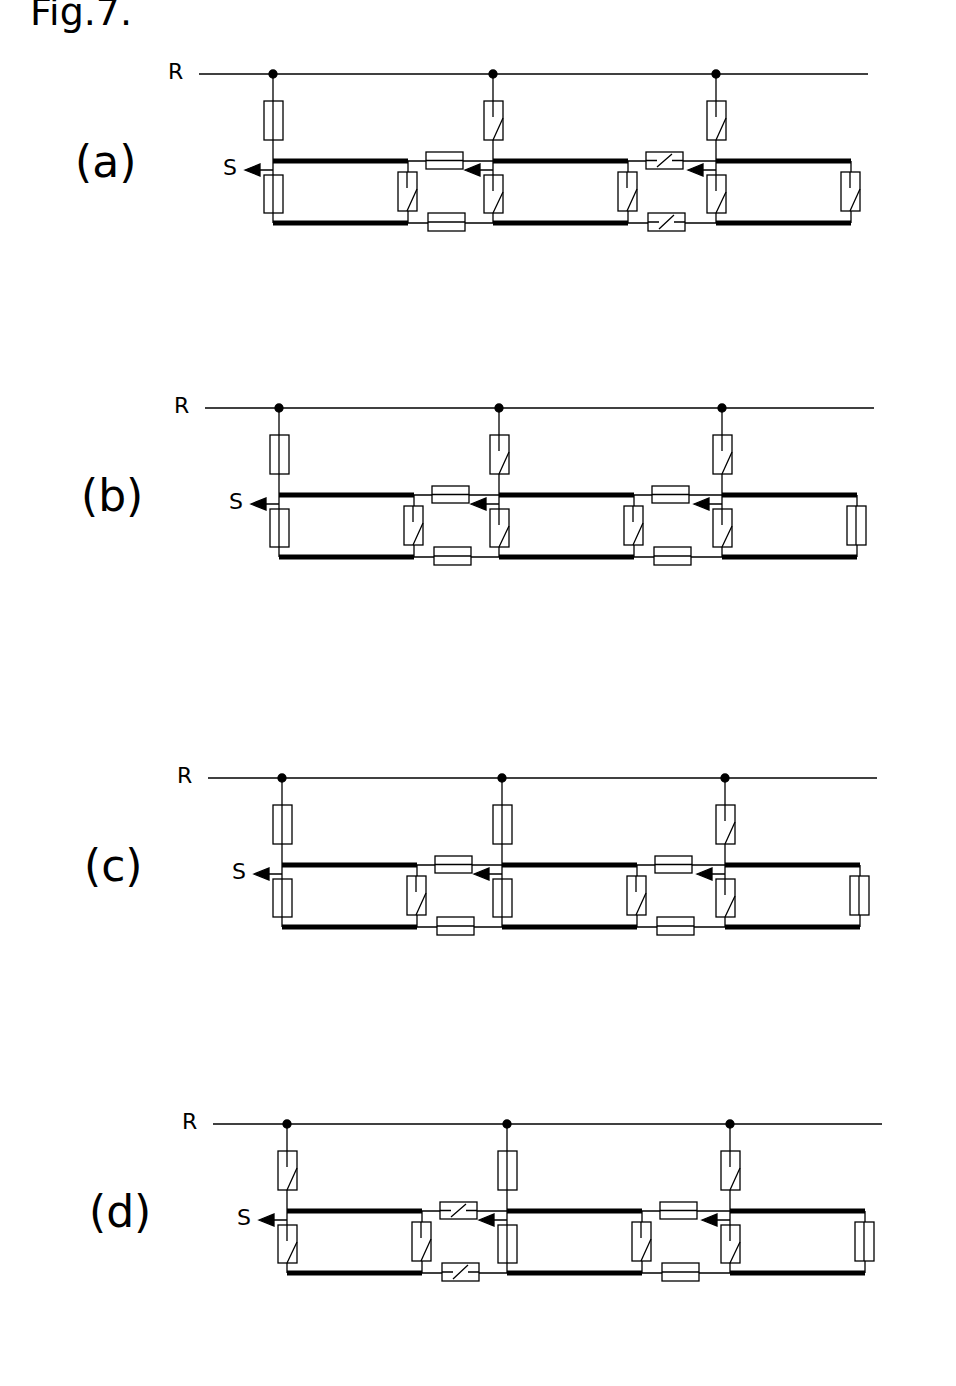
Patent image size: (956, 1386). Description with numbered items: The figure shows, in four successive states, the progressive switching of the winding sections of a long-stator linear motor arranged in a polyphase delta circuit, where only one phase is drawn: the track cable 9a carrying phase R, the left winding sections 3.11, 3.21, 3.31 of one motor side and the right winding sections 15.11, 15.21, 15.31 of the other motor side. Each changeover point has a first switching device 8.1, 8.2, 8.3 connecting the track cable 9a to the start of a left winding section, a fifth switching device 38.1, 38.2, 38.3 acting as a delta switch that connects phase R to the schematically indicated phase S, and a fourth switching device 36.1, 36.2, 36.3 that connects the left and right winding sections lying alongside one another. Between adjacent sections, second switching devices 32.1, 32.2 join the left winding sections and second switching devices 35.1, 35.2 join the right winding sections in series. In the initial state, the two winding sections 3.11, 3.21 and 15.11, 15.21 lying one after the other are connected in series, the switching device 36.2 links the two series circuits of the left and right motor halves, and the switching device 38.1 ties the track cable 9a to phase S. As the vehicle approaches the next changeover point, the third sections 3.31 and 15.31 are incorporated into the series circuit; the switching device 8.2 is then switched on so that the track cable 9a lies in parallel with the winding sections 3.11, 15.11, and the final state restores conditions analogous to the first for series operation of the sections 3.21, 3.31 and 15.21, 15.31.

The track cable 9a is at (212, 72).
The first switching device 8.1 is at (282, 122).
The first switching device 8.2 is at (533, 642).
The first switching device 8.3 is at (756, 642).
The left winding section 3.11 is at (373, 158).
The left winding section 3.21 is at (567, 670).
The left winding section 3.31 is at (790, 670).
The second switching device 32.1 is at (442, 150).
The second switching device 32.2 is at (651, 659).
The fifth switching device 38.1 is at (283, 193).
The fifth switching device 38.2 is at (536, 719).
The fifth switching device 38.3 is at (759, 719).
The right winding section 15.11 is at (303, 228).
The right winding section 15.21 is at (559, 770).
The right winding section 15.31 is at (782, 770).
The fourth switching device 36.1 is at (397, 211).
The fourth switching device 36.2 is at (600, 747).
The fourth switching device 36.3 is at (823, 747).
The second switching device 35.1 is at (443, 231).
The second switching device 35.2 is at (656, 765).